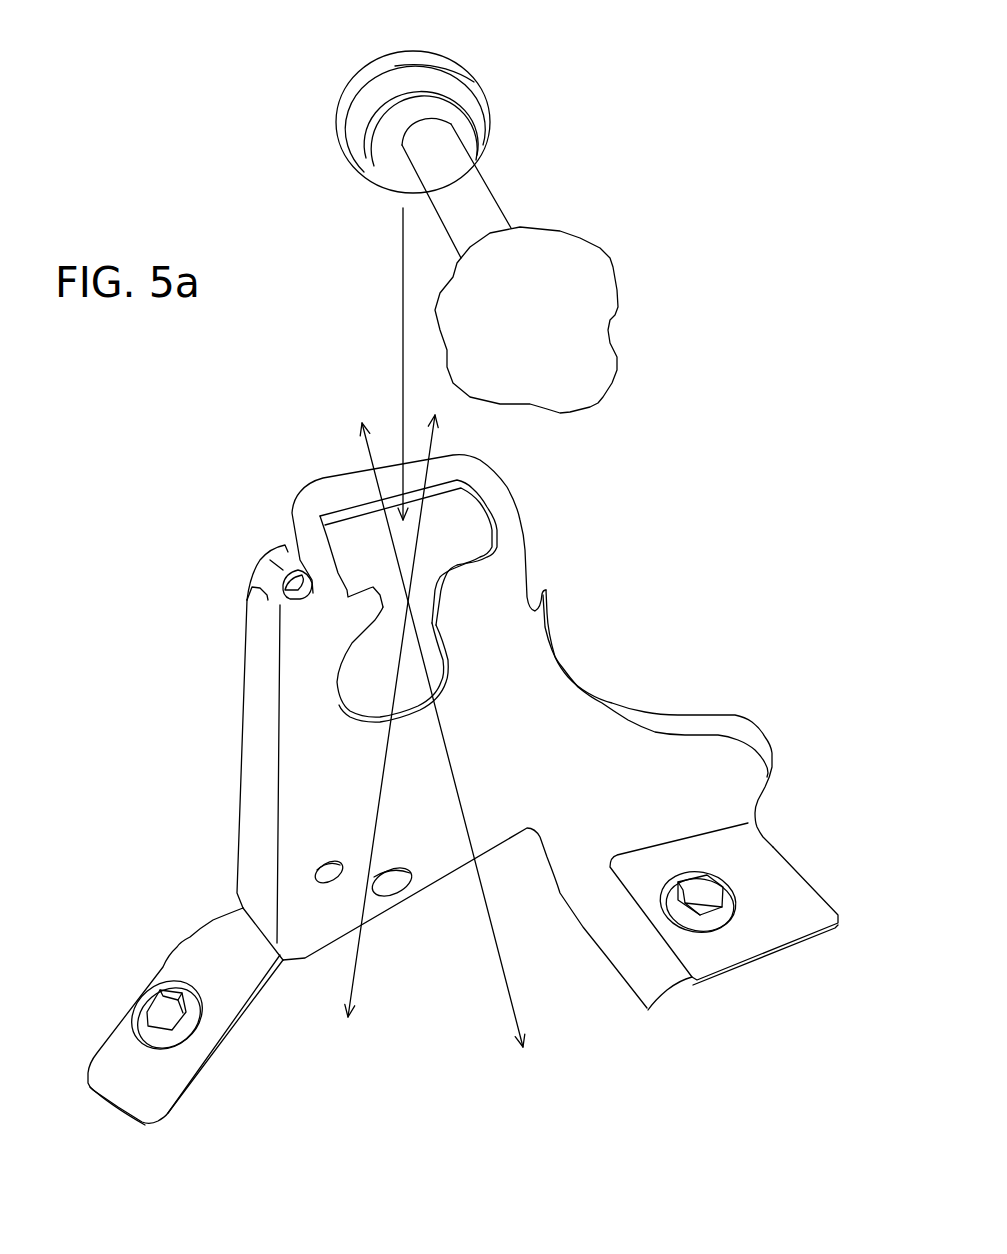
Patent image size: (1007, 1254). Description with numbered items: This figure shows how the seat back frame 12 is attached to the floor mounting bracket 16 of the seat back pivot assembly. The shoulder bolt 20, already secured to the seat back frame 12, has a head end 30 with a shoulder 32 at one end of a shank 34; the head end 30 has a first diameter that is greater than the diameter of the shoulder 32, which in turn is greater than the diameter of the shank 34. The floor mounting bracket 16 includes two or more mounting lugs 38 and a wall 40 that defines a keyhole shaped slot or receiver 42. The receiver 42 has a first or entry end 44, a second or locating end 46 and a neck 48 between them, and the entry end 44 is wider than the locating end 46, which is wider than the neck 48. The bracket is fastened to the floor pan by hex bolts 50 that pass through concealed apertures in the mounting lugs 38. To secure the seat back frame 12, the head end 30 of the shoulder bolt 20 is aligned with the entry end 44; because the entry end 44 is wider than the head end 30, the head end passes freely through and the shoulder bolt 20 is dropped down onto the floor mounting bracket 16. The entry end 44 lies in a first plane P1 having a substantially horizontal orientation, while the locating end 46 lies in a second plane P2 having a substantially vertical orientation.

The seat back frame 12 is at (597, 292).
The floor mounting bracket 16 is at (449, 790).
The shoulder bolt 20 is at (447, 153).
The head end 30 is at (352, 97).
The shoulder 32 is at (368, 147).
The shank 34 is at (480, 200).
The mounting lugs 38 is at (225, 992).
The wall 40 is at (467, 778).
The keyhole shaped slot or receiver 42 is at (473, 573).
The first or entry end 44 is at (365, 528).
The second or locating end 46 is at (368, 687).
The neck 48 is at (393, 606).
The hex bolts 50 is at (155, 1010).
The first plane P1 is at (358, 457).
The second plane P2 is at (433, 442).